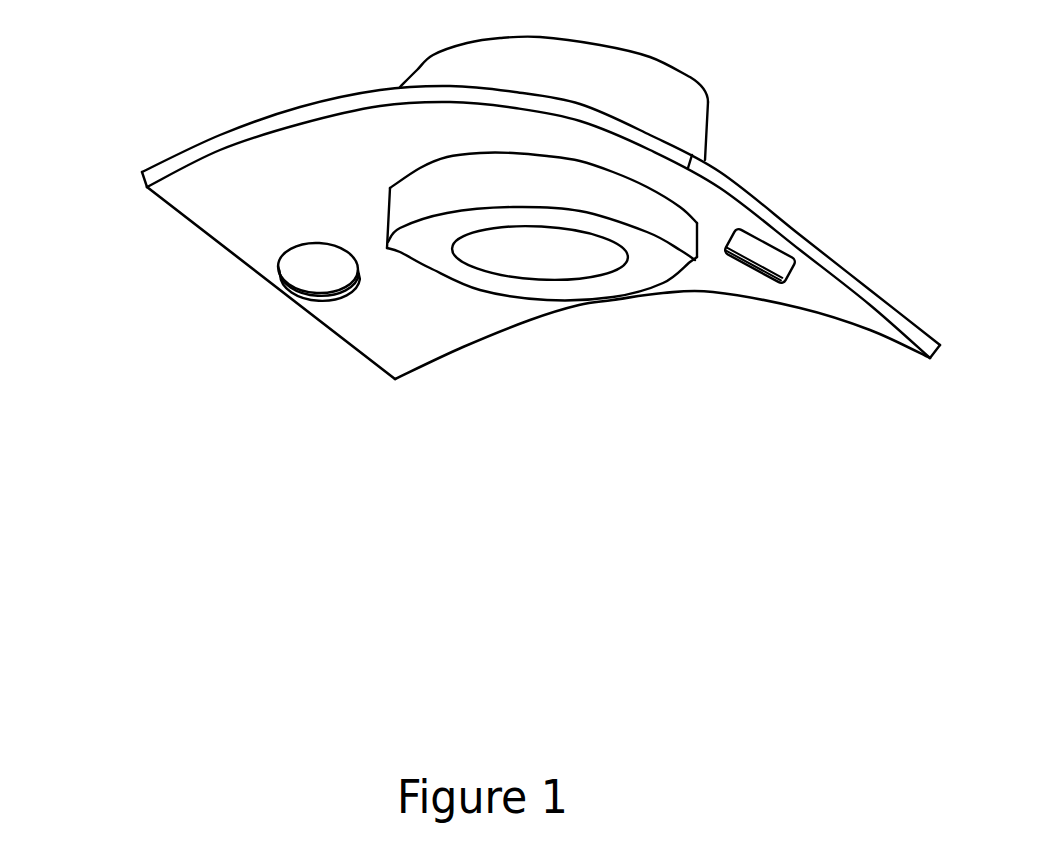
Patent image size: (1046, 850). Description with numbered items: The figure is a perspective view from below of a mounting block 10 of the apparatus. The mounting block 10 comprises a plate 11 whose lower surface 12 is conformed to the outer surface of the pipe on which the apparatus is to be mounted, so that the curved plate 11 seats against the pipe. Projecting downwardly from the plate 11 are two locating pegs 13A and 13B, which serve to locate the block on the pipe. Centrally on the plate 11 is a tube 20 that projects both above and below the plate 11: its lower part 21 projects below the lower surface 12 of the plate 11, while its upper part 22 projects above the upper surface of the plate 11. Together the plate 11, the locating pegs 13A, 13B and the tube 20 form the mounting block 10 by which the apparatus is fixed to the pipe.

The mounting block 10 is at (787, 142).
The plate 11 is at (142, 172).
The lower surface 12 is at (435, 340).
The locating peg 13A is at (307, 297).
The locating peg 13B is at (788, 272).
The tube 20 is at (428, 73).
The lower part 21 is at (648, 280).
The upper part 22 is at (693, 100).